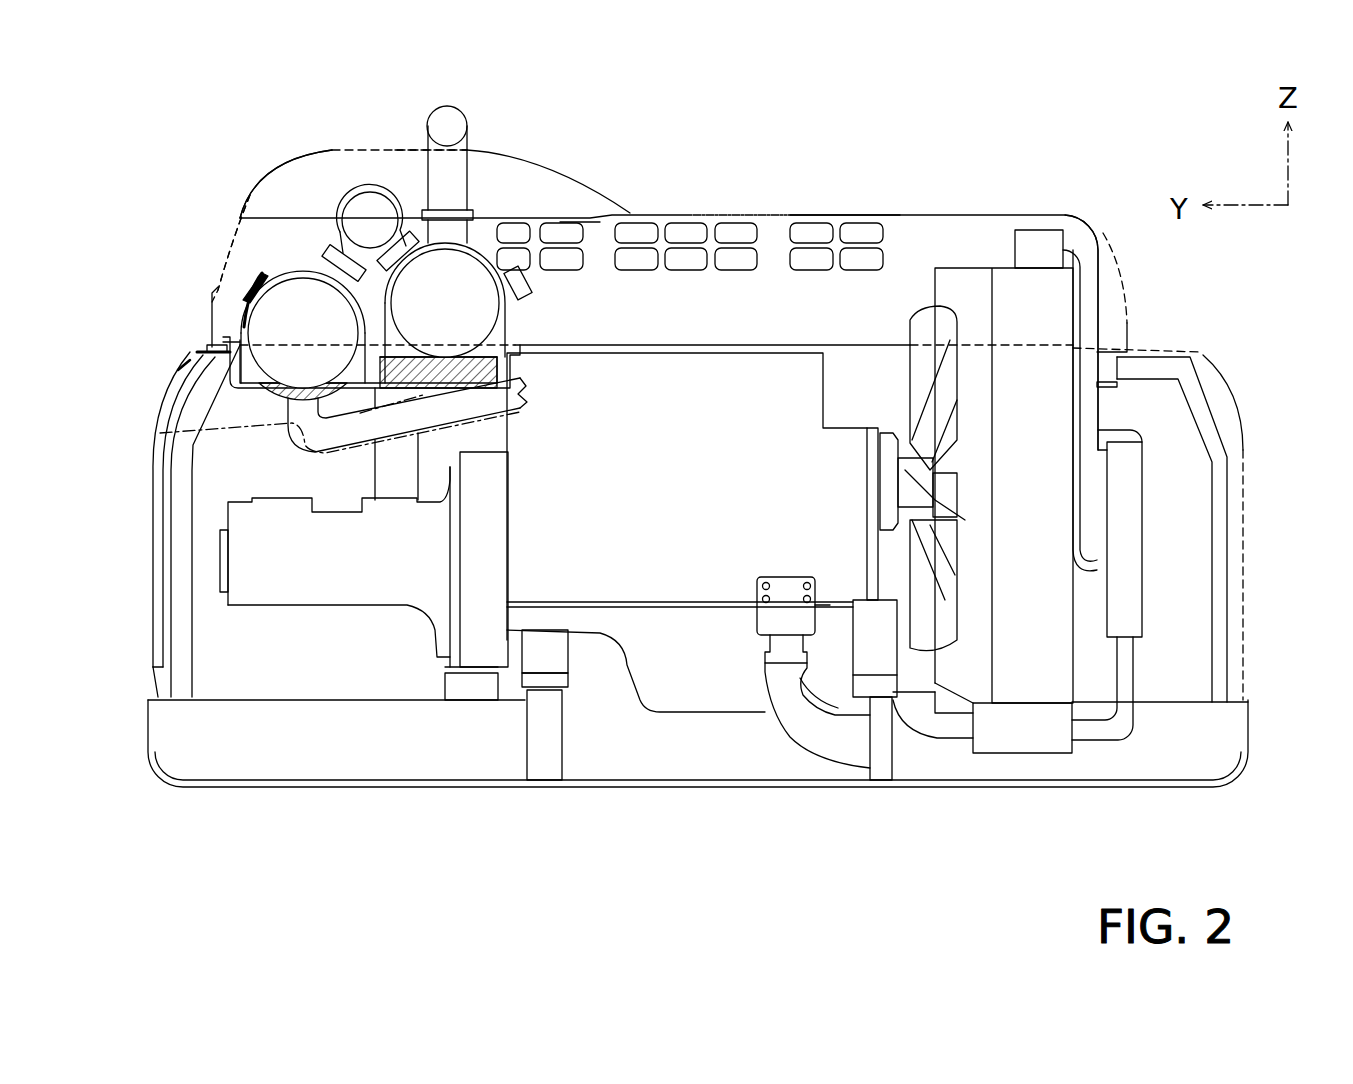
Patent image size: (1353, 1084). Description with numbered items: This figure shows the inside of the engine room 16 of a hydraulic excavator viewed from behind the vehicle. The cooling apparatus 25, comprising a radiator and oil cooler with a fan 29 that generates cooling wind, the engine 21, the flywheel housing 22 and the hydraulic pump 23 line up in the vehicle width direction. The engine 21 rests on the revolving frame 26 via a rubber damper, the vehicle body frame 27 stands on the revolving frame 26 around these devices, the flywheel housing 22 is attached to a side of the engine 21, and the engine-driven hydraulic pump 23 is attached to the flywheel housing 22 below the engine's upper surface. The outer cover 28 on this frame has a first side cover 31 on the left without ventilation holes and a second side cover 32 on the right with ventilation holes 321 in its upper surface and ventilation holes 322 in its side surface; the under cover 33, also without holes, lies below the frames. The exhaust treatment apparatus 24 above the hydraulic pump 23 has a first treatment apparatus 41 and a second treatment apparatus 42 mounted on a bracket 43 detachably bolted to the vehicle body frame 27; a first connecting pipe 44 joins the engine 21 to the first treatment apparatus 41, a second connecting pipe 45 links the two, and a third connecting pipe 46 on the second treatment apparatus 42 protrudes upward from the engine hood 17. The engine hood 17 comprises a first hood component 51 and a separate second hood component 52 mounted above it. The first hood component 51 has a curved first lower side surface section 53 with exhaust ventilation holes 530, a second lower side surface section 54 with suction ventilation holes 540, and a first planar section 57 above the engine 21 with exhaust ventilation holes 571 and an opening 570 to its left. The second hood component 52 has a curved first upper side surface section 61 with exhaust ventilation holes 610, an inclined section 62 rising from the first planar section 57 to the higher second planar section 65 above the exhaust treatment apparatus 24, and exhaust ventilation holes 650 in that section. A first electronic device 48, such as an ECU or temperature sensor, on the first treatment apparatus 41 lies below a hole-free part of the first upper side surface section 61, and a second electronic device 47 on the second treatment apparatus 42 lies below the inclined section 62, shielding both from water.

The engine room 16 is at (1230, 323).
The engine hood 17 is at (850, 188).
The engine 21 is at (700, 583).
The flywheel housing 22 is at (477, 640).
The hydraulic pump 23 is at (290, 580).
The exhaust treatment apparatus 24 is at (318, 276).
The cooling apparatus 25 is at (997, 257).
The revolving frame 26 is at (905, 752).
The vehicle body frame 27 is at (183, 393).
The outer cover 28 is at (155, 510).
The fan 29 is at (923, 337).
The first side cover 31 is at (158, 548).
The second side cover 32 is at (1208, 493).
The ventilation holes 321 is at (1153, 352).
The ventilation holes 322 is at (1243, 563).
The under cover 33 is at (605, 787).
The first treatment apparatus 41 is at (287, 293).
The second treatment apparatus 42 is at (463, 277).
The bracket 43 is at (197, 352).
The first connecting pipe 44 is at (280, 425).
The second connecting pipe 45 is at (370, 207).
The third connecting pipe 46 is at (455, 182).
The second electronic device 47 is at (520, 268).
The first electronic device 48 is at (242, 293).
The first hood component 51 is at (953, 215).
The second hood component 52 is at (358, 179).
The first lower side surface section 53 is at (180, 271).
The ventilation holes 530 is at (225, 245).
The second lower side surface section 54 is at (1142, 286).
The ventilation holes 540 is at (1105, 242).
The first planar section 57 is at (810, 213).
The opening 570 is at (562, 218).
The ventilation holes 571 is at (723, 207).
The first upper side surface section 61 is at (257, 178).
The ventilation holes 610 is at (252, 193).
The inclined section 62 is at (565, 175).
The second planar section 65 is at (330, 143).
The ventilation holes 650 is at (393, 150).